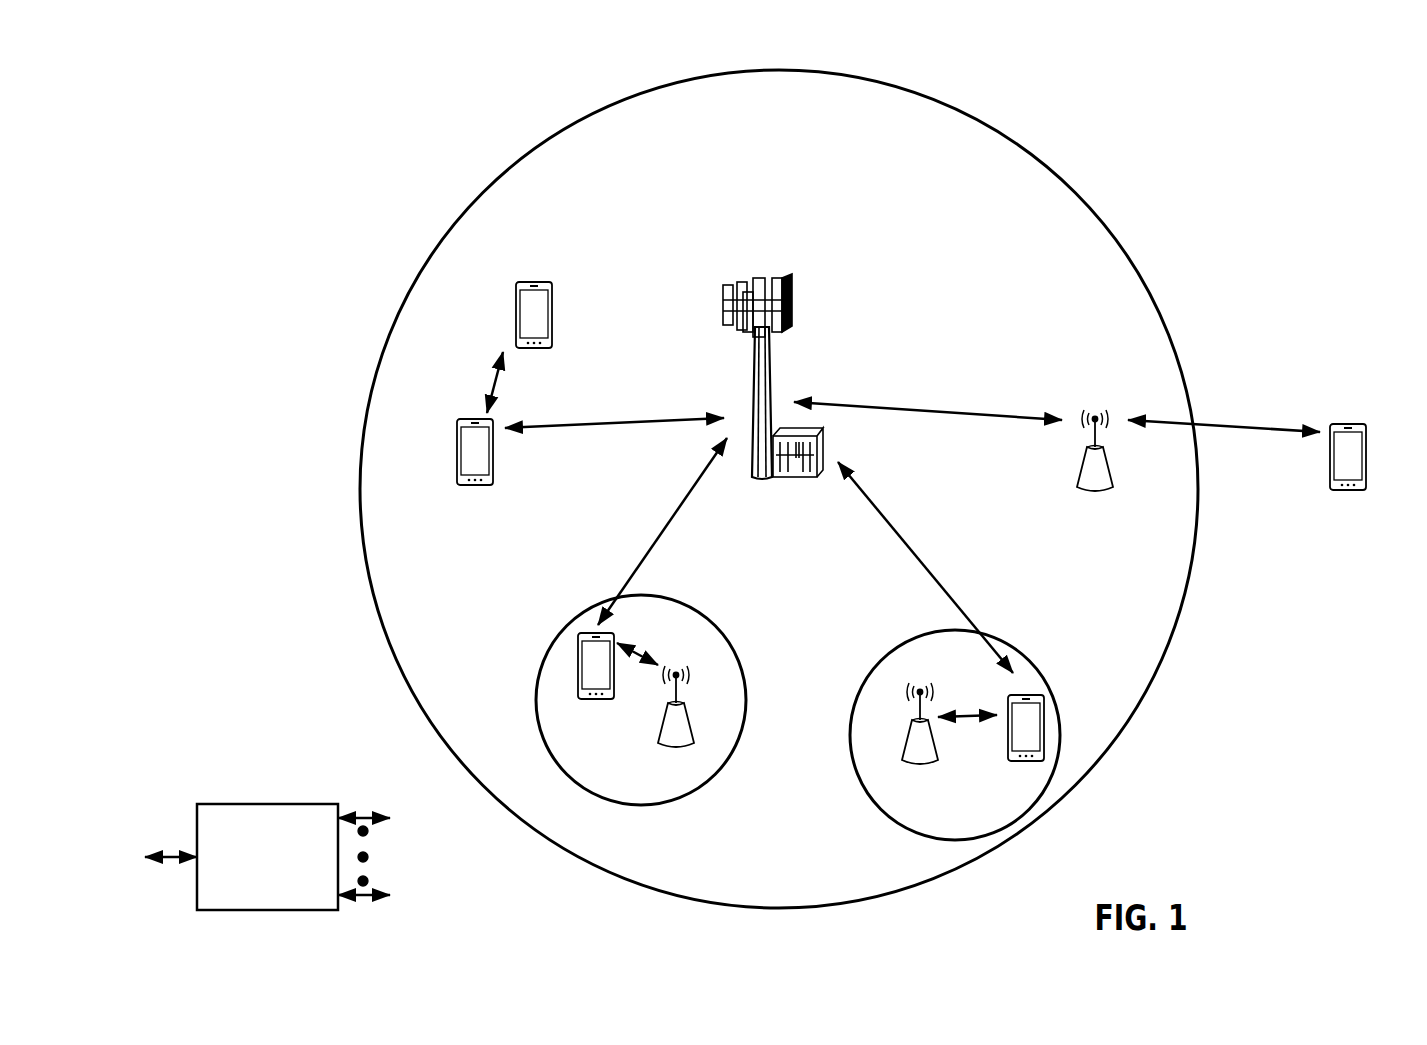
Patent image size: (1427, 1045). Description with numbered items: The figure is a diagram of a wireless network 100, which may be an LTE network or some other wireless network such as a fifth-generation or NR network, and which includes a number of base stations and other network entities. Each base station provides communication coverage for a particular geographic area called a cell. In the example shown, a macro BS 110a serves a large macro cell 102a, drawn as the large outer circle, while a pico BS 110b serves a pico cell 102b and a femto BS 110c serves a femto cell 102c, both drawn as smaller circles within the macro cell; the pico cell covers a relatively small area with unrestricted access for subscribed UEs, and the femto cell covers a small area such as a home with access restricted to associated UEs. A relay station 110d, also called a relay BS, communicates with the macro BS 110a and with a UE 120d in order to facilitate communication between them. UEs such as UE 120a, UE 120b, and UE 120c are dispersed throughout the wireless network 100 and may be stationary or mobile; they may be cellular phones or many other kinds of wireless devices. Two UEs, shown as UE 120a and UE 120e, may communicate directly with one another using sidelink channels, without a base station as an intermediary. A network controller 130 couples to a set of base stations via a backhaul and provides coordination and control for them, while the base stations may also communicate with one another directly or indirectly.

The wireless network 100 is at (250, 63).
The macro cell 102a is at (1057, 173).
The pico cell 102b is at (733, 637).
The femto cell 102c is at (893, 648).
The macro BS 110a is at (769, 272).
The pico BS 110b is at (696, 728).
The femto BS 110c is at (903, 750).
The relay station 110d is at (1096, 412).
The UE 120a is at (456, 448).
The UE 120b is at (587, 701).
The UE 120c is at (1010, 762).
The UE 120d is at (1356, 423).
The UE 120e is at (515, 300).
The network controller 130 is at (266, 803).